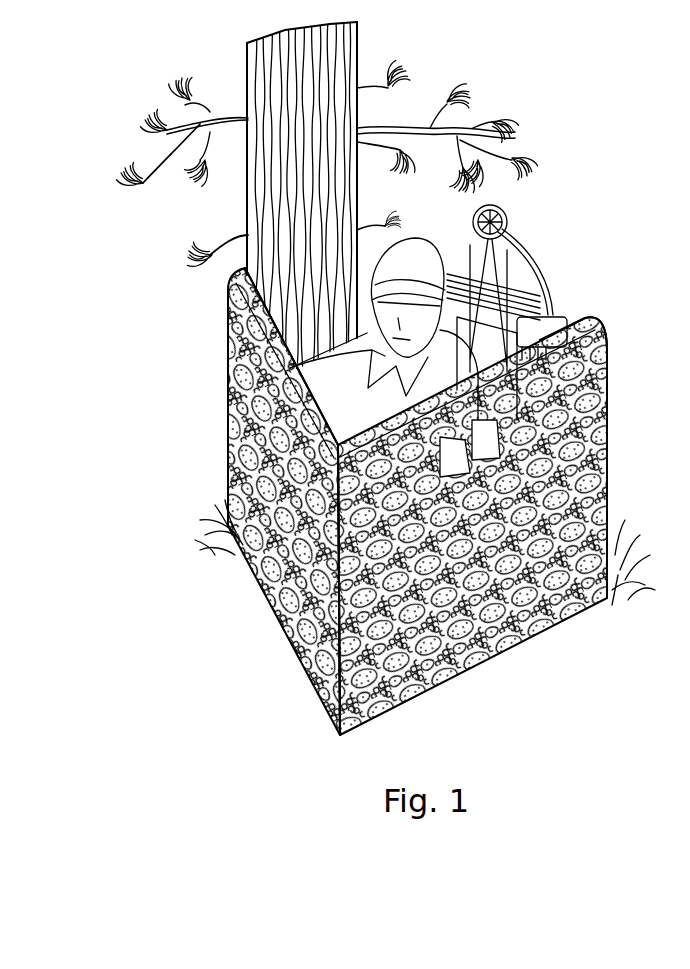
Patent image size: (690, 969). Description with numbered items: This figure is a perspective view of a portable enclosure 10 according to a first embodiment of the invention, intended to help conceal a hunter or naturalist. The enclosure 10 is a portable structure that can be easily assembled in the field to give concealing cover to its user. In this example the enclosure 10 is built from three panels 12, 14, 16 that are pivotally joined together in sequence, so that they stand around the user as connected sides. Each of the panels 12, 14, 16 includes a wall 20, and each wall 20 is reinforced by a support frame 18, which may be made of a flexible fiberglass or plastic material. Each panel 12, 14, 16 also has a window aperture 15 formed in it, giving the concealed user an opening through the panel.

The portable enclosure 10 is at (238, 690).
The panel 12 is at (233, 410).
The panel 14 is at (533, 640).
The window aperture 15 is at (233, 343).
The panel 16 is at (560, 312).
The support frame 18 is at (330, 693).
The wall 20 is at (603, 490).